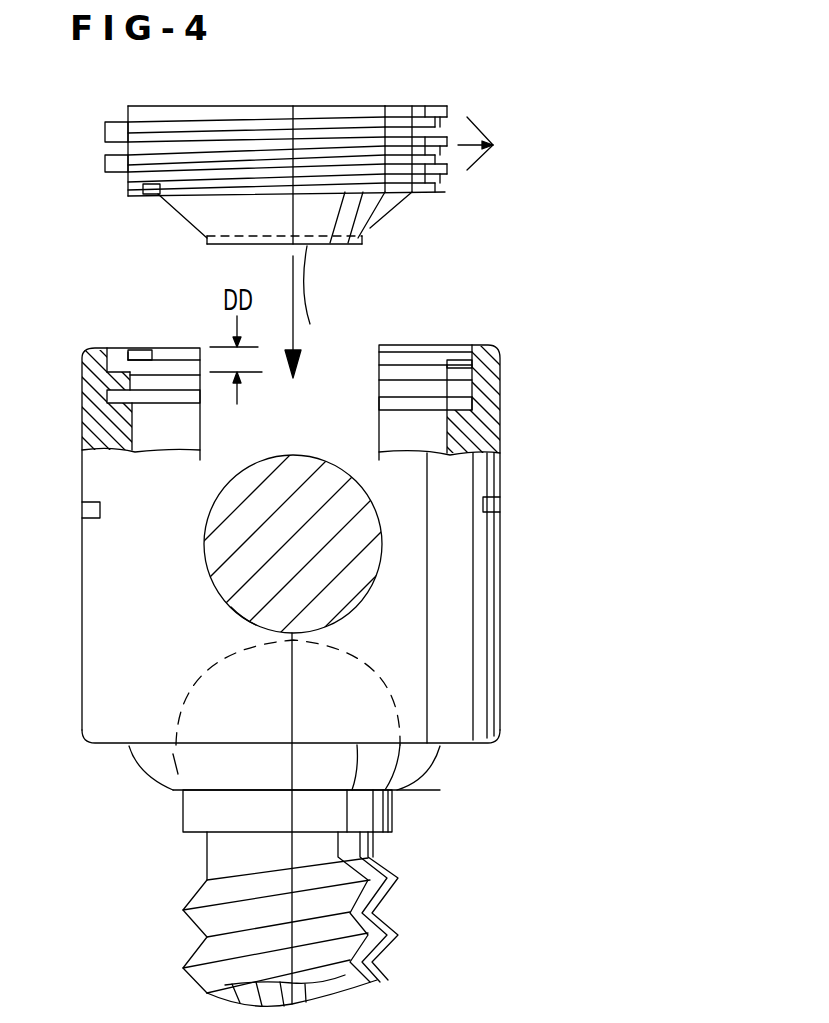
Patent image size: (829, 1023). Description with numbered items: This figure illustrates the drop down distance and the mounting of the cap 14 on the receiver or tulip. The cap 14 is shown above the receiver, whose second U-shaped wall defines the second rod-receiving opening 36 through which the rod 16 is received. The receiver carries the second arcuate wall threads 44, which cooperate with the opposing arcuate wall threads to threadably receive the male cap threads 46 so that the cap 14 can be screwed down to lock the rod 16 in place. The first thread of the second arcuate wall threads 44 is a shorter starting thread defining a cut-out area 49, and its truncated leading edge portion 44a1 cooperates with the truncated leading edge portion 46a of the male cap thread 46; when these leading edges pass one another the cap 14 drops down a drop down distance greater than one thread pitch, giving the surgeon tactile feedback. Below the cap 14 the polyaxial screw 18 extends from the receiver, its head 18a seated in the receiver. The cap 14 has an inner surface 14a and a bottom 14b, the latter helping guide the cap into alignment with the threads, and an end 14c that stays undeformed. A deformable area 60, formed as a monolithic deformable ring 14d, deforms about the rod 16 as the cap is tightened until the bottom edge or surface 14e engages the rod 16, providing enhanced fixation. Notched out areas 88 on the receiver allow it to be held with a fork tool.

The cap 14 is at (372, 104).
The inner surface 14a is at (362, 248).
The bottom 14b is at (392, 213).
The end 14c is at (256, 258).
The deformable ring 14d is at (207, 240).
The bottom edge or surface 14e is at (319, 317).
The rod 16 is at (296, 456).
The polyaxial screw 18 is at (207, 856).
The head 18a is at (190, 686).
The second rod-receiving opening 36 is at (236, 620).
The second arcuate wall threads 44 is at (187, 352).
The leading edge portion of the first thread 44a1 is at (140, 353).
The male cap threads 46 is at (501, 143).
The leading edge portion 46a is at (143, 190).
The cut-out area 49 is at (121, 373).
The deformable area 60 is at (324, 258).
The notched out areas 88 is at (80, 512).